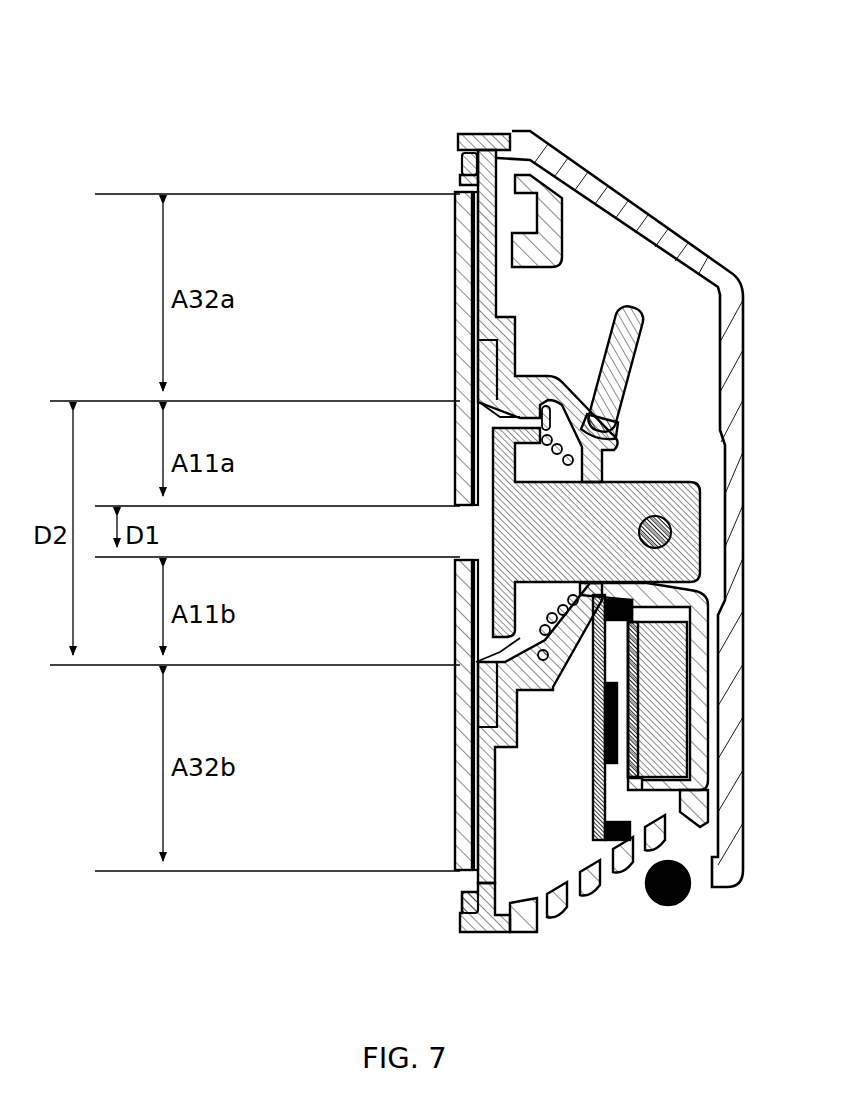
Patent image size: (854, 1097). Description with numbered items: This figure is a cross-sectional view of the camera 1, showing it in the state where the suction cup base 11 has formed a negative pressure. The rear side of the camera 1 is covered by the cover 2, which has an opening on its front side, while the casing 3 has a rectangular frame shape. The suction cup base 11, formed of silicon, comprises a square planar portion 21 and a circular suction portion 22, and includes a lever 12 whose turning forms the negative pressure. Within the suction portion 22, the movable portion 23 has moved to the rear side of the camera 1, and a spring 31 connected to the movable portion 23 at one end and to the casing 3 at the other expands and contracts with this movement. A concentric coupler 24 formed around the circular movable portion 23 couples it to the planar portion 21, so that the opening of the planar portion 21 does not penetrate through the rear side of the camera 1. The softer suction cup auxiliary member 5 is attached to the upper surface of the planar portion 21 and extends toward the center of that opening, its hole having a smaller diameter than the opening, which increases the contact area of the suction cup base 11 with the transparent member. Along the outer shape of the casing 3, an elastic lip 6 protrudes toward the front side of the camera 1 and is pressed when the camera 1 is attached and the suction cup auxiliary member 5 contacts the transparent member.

The camera 1 is at (602, 72).
The cover 2 is at (745, 497).
The casing 3 is at (458, 135).
The suction cup auxiliary member 5 is at (455, 285).
The lip 6 is at (448, 160).
The suction cup base 11 is at (665, 450).
The lever 12 is at (637, 350).
The planar portion 21 is at (480, 358).
The suction portion 22 is at (358, 425).
The movable portion 23 is at (490, 528).
The coupler 24 is at (487, 410).
The spring 31 is at (563, 395).